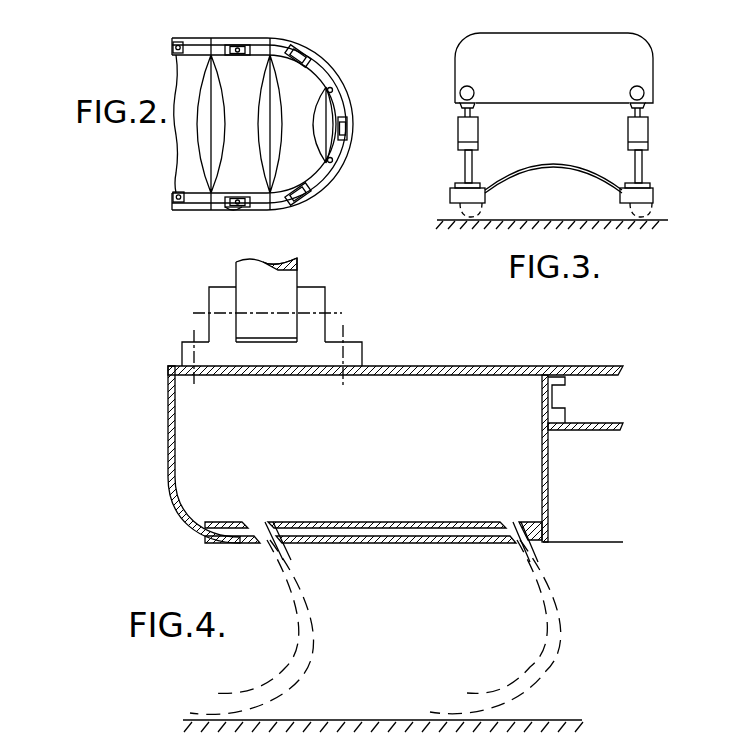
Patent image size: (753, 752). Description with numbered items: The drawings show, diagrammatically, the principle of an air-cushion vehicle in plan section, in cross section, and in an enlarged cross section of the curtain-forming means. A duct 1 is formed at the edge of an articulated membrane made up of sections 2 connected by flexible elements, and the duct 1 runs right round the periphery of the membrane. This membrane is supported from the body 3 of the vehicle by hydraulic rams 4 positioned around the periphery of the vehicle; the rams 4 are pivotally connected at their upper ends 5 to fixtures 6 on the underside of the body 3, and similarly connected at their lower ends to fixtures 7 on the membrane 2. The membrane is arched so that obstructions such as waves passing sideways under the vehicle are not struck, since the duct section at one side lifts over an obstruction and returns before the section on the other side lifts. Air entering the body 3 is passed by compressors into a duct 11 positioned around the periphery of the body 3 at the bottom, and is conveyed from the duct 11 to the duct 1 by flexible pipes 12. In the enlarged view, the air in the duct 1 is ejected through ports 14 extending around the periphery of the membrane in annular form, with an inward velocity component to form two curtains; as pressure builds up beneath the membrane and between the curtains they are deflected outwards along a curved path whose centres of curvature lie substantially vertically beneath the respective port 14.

In FIG. 2, the duct 1 is at (326, 177).
In FIG. 3, the duct 1 is at (450, 195).
In FIG. 4, the duct 1 is at (188, 433).
In FIG. 2, the membrane sections 2 is at (175, 154).
In FIG. 3, the membrane sections 2 is at (565, 177).
In FIG. 4, the membrane sections 2 is at (598, 398).
In FIG. 3, the body 3 is at (591, 40).
In FIG. 2, the hydraulic rams 4 is at (242, 207).
In FIG. 3, the hydraulic rams 4 is at (458, 136).
In FIG. 3, the upper ends 5 is at (645, 113).
In FIG. 3, the fixtures 6 is at (644, 107).
In FIG. 2, the fixtures 7 is at (303, 54).
In FIG. 3, the fixtures 7 is at (646, 187).
In FIG. 4, the fixtures 7 is at (317, 332).
In FIG. 3, the duct 11 is at (460, 93).
In FIG. 2, the flexible pipes 12 is at (183, 42).
In FIG. 4, the ports 14 is at (268, 542).